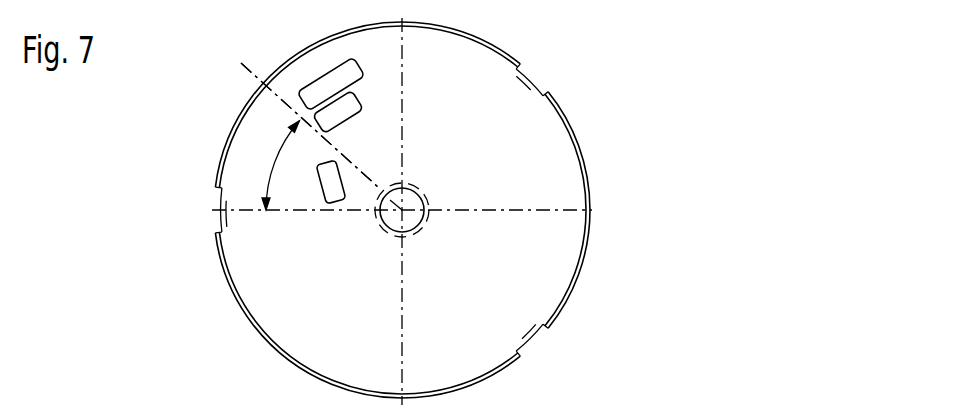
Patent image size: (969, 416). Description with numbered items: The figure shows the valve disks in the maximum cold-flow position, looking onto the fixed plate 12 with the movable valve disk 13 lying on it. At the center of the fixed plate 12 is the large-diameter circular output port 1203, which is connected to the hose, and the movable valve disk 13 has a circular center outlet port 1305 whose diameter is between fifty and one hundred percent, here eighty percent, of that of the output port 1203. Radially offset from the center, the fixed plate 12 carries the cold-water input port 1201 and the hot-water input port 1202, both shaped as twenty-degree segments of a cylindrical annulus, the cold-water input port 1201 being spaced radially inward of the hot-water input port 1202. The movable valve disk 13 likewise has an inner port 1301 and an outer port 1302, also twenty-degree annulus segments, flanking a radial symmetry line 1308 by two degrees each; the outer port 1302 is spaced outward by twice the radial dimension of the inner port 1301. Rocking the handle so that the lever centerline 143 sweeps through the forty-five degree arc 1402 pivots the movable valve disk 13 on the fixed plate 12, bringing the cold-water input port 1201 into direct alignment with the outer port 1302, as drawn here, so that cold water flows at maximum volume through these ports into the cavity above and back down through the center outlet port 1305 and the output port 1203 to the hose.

The fixed plate 12 is at (566, 112).
The movable valve disk 13 is at (533, 182).
The output port 1203 is at (413, 217).
The center outlet port 1305 is at (402, 210).
The outer port 1302 is at (332, 80).
The hot-water input port 1202 is at (350, 107).
The cold-water input port 1201 is at (322, 163).
The inner port 1301 is at (327, 190).
The arc 1402 is at (279, 151).
The radial symmetry line 1308 is at (252, 79).
The lever centerline 143 is at (271, 125).